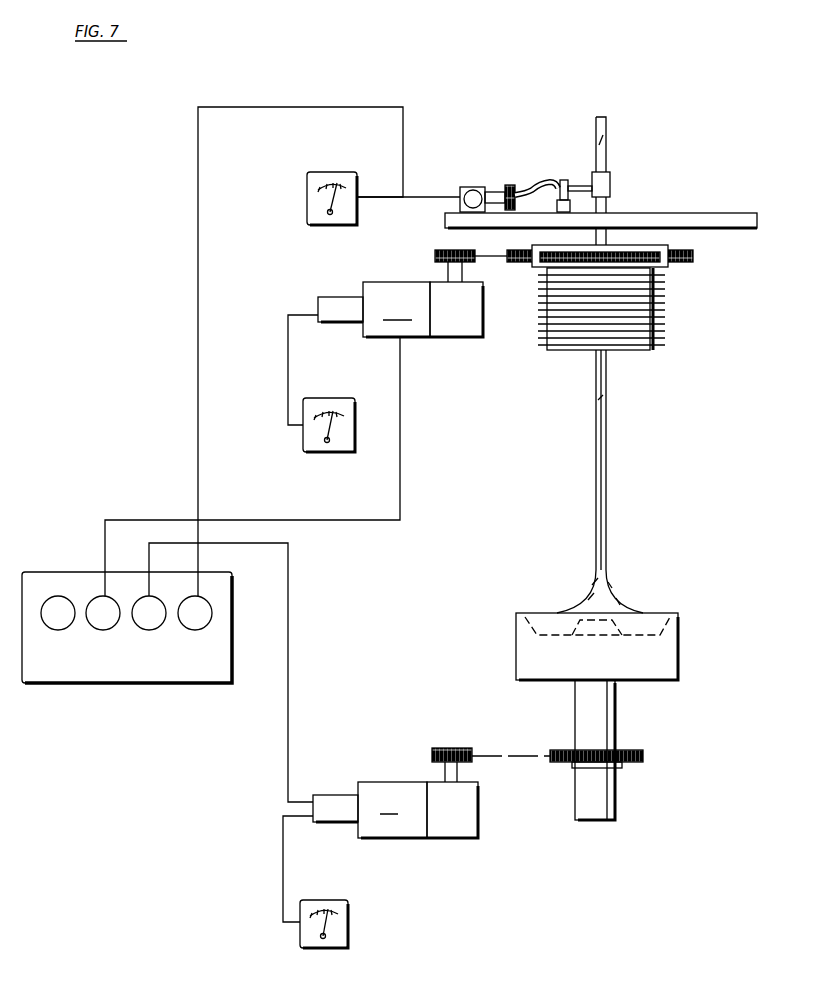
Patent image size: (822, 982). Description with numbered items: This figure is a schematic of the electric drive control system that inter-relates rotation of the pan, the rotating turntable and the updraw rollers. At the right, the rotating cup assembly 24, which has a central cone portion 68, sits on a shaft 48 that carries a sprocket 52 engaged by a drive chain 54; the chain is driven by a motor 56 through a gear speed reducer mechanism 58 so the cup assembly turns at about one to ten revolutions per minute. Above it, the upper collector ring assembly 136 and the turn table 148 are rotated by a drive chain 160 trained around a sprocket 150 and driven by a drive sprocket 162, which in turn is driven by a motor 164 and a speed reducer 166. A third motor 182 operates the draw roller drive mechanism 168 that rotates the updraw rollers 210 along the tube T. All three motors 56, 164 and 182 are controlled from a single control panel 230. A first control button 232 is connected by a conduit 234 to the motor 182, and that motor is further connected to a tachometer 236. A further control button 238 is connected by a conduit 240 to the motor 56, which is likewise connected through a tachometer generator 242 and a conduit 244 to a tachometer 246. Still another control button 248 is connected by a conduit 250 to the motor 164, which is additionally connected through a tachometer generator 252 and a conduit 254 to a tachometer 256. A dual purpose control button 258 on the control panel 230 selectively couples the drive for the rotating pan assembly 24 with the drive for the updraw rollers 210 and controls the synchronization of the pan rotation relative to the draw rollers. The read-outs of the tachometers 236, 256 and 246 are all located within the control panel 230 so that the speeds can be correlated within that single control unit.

The tube / shaft T is at (607, 128).
The rotating cup assembly 24 is at (514, 640).
The shaft 48 is at (603, 725).
The sprocket 52 is at (640, 760).
The drive chain 54 is at (512, 752).
The motor 56 is at (392, 810).
The gear speed reducer mechanism 58 is at (452, 828).
The central cone portion 68 is at (603, 630).
The upper collector ring assembly 136 is at (655, 350).
The turn table 148 is at (757, 212).
The sprocket 150 is at (695, 258).
The drive chain 160 is at (495, 259).
The drive sprocket 162 is at (433, 256).
The motor 164 is at (396, 309).
The speed reducer 166 is at (455, 338).
The draw roller drive mechanism 168 is at (536, 168).
The motor 182 is at (473, 186).
The updraw rollers 210 is at (612, 187).
The control panel 230 is at (128, 673).
The first control button 232 is at (192, 624).
The conduit 234 is at (198, 268).
The tachometer 236 is at (307, 210).
The control button 238 is at (142, 622).
The conduit 240 is at (288, 677).
The tachometer generator 242 is at (328, 795).
The conduit 244 is at (283, 872).
The tachometer 246 is at (340, 945).
The control button 248 is at (95, 624).
The conduit 250 is at (400, 467).
The tachometer generator 252 is at (340, 296).
The conduit 254 is at (288, 372).
The tachometer 256 is at (303, 452).
The dual purpose control button 258 is at (48, 622).